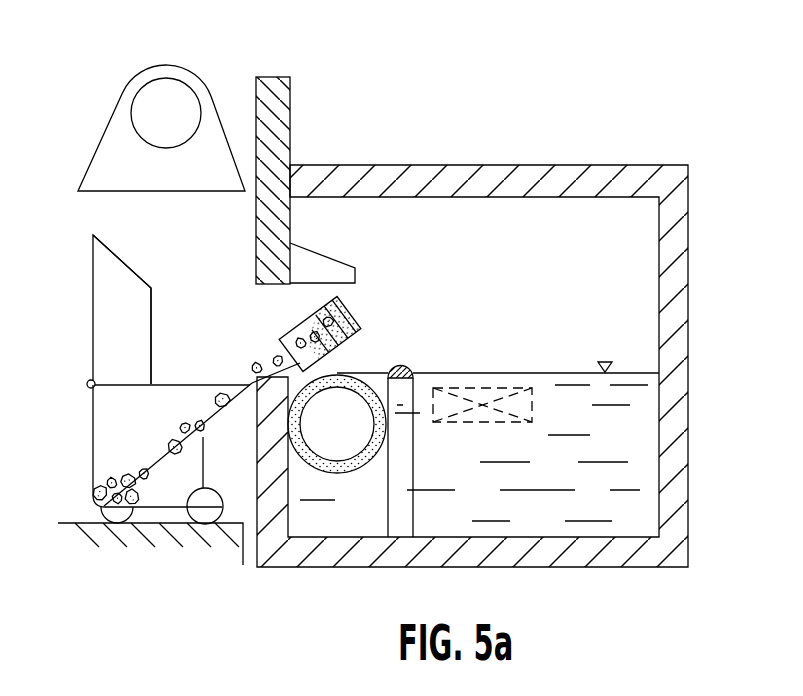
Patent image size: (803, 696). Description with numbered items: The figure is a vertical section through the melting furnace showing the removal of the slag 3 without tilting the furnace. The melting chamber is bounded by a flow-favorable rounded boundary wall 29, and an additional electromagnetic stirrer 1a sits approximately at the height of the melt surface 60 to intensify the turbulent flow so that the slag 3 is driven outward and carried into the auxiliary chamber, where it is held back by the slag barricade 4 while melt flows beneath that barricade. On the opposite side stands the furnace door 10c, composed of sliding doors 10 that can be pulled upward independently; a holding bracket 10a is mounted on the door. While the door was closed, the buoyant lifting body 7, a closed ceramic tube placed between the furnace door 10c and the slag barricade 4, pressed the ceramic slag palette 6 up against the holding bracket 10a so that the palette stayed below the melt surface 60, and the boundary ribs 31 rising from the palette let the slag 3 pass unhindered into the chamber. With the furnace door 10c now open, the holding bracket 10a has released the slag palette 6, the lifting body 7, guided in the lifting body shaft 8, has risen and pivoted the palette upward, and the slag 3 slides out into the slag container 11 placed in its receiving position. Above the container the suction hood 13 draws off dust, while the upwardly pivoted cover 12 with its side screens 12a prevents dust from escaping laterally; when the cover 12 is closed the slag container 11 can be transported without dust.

The additional electromagnetic stirrer 1a is at (537, 414).
The slag 3 is at (303, 320).
The slag barricade 4 is at (411, 371).
The slag palette 6 is at (358, 334).
The lifting body 7 is at (368, 452).
The lifting body shaft 8 is at (365, 517).
The sliding door 10 is at (278, 107).
The holding bracket 10a is at (318, 252).
The furnace door 10c is at (247, 117).
The slag container 11 is at (105, 440).
The cover 12 is at (93, 307).
The side screen 12a is at (137, 308).
The suction hood 13 is at (112, 133).
The boundary wall 29 is at (675, 333).
The boundary rib 31 is at (308, 314).
The melt surface 60 is at (543, 373).